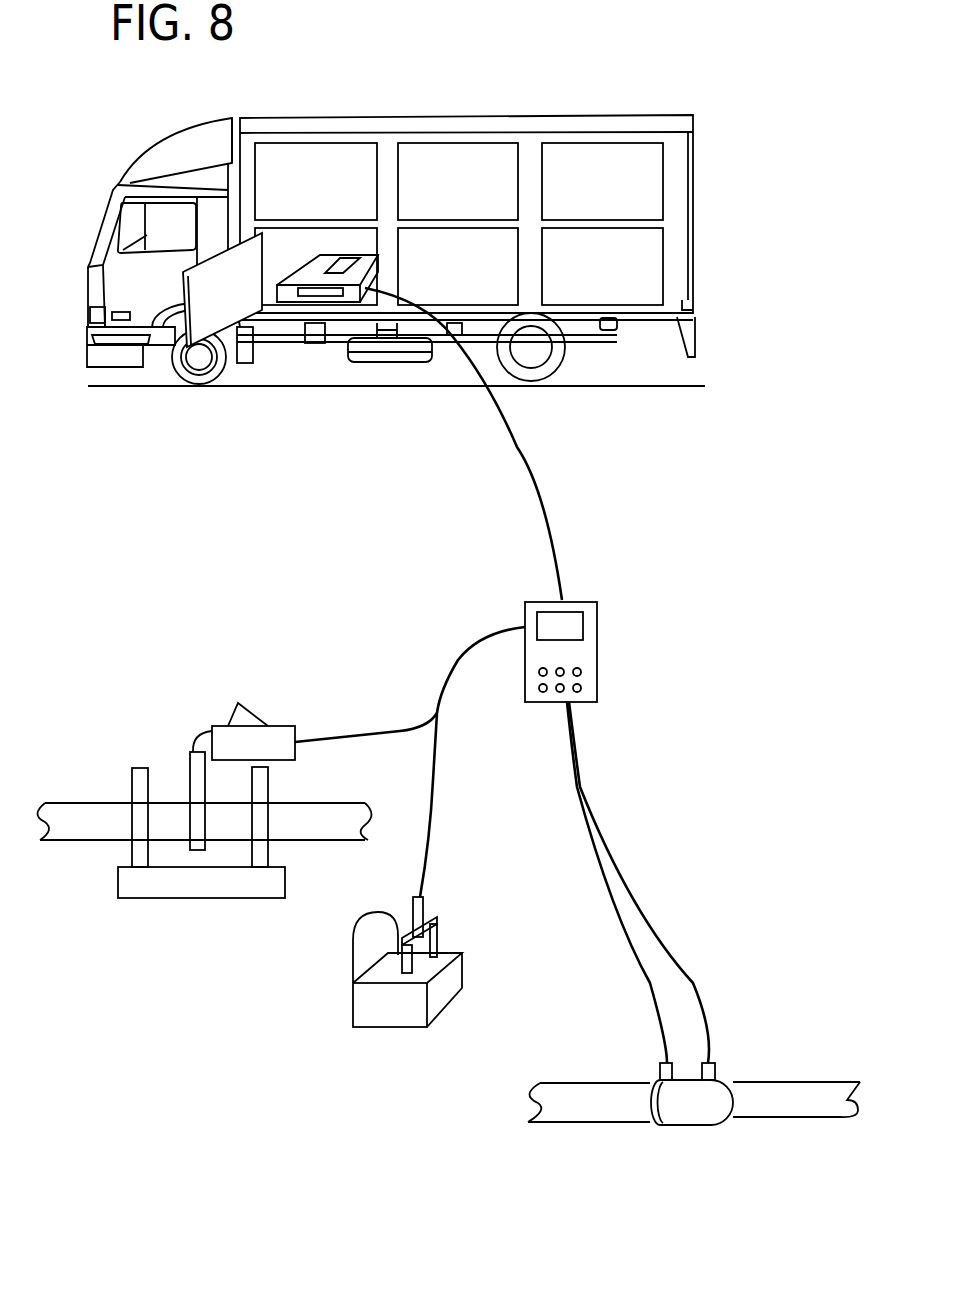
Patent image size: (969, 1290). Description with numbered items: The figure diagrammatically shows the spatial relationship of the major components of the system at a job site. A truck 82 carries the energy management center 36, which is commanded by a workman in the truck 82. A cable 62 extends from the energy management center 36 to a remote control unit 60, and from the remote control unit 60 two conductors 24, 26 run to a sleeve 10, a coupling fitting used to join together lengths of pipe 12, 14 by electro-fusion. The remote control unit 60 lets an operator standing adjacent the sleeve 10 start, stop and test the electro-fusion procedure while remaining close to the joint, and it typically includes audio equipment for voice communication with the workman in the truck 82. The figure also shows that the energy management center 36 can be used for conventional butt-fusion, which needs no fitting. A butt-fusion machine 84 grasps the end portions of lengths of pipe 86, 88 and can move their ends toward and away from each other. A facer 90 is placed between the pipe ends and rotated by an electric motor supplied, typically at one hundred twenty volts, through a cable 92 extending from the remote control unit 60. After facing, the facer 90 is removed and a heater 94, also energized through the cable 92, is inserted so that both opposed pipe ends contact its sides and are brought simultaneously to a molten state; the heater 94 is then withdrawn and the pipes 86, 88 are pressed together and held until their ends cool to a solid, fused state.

The sleeve 10 is at (688, 1105).
The pipe 12 is at (805, 1090).
The pipe 14 is at (575, 1093).
The conductor 24 is at (650, 990).
The conductor 26 is at (710, 1018).
The energy management center 36 is at (337, 305).
The remote control unit 60 is at (592, 652).
The cable 62 is at (518, 447).
The truck 82 is at (419, 115).
The butt-fusion machine 84 is at (168, 887).
The pipe 86 is at (90, 813).
The pipe 88 is at (330, 832).
The facer 90 is at (275, 730).
The cable 92 is at (473, 643).
The heater 94 is at (387, 1013).